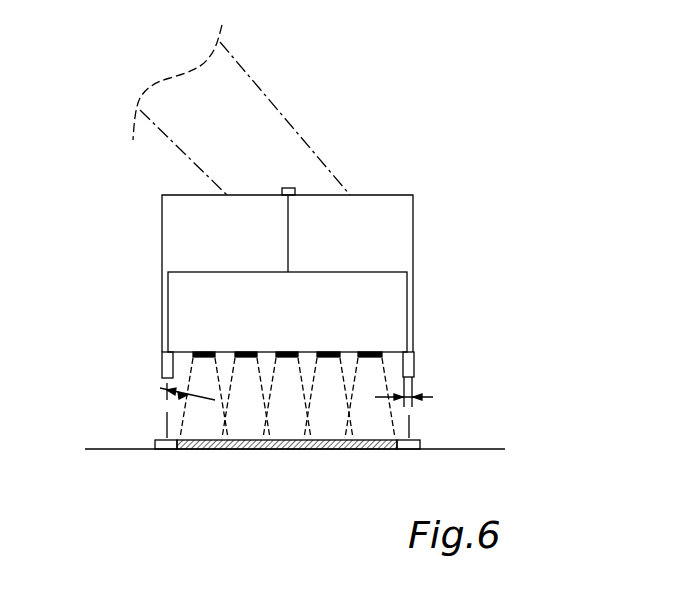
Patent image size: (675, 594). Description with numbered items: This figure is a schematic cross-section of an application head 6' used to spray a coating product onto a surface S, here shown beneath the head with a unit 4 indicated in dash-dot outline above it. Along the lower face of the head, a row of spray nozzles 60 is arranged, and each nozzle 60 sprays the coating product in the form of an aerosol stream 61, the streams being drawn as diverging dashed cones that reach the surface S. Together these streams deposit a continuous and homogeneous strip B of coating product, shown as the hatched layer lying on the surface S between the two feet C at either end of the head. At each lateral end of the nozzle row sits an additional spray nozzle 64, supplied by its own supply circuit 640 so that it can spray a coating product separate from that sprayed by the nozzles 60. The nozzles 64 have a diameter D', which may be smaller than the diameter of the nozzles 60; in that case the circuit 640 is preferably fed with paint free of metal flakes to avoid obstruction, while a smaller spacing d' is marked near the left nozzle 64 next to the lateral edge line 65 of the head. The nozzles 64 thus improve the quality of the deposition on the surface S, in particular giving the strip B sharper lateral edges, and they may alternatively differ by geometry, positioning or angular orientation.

The container unit 4 is at (241, 110).
The supply circuit 640 is at (347, 260).
The cleaning device housing 6' is at (313, 273).
The spray nozzle 60 is at (210, 350).
The aerosol stream 61 is at (207, 412).
The spray nozzle 64 is at (162, 363).
The side edge 65 is at (158, 408).
The distance d' is at (187, 390).
The diameter D' is at (418, 388).
The strip B is at (313, 453).
The support foot C is at (167, 453).
The surface S is at (478, 446).